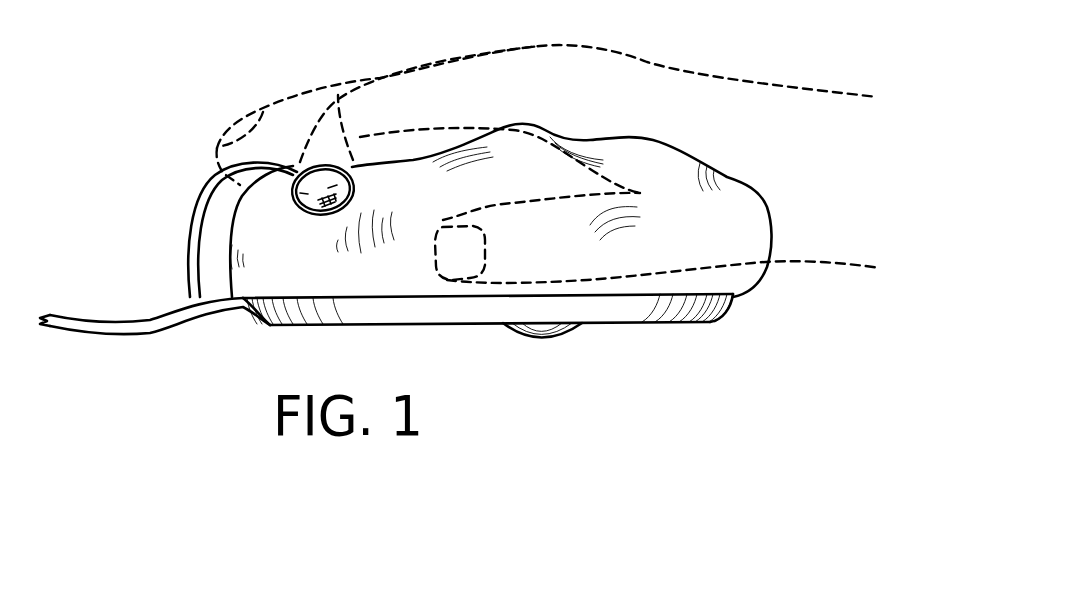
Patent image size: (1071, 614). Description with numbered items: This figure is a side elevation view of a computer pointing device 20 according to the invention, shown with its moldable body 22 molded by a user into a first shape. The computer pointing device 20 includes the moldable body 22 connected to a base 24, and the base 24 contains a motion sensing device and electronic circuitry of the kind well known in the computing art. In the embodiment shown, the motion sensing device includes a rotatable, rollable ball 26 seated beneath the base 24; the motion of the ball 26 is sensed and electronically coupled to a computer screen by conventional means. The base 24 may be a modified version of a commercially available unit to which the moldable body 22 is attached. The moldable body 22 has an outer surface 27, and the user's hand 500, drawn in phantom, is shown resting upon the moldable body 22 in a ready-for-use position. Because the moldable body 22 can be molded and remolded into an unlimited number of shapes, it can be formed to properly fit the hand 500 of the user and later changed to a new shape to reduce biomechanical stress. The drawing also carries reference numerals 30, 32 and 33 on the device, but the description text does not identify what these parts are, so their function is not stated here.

The computer pointing device 20 is at (530, 255).
The moldable body 22 is at (772, 238).
The base 24 is at (712, 323).
The rotatable ball 26 is at (548, 338).
The outer surface 27 is at (412, 208).
The button 30 is at (296, 202).
The strap 32 is at (193, 274).
The cord 33 is at (163, 333).
The hand 500 is at (647, 62).